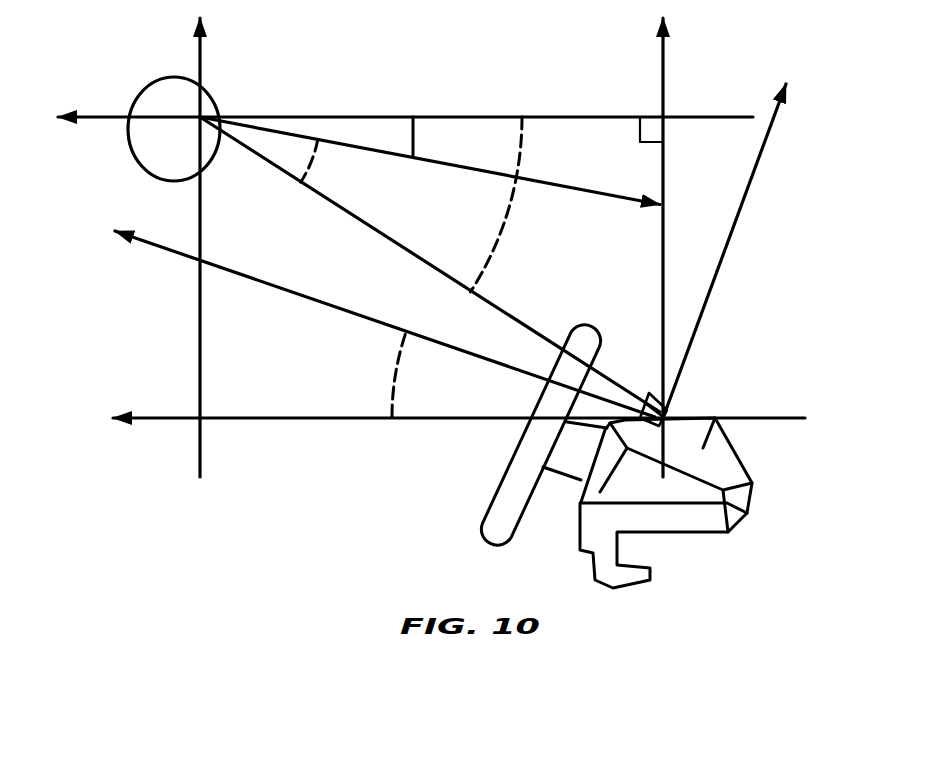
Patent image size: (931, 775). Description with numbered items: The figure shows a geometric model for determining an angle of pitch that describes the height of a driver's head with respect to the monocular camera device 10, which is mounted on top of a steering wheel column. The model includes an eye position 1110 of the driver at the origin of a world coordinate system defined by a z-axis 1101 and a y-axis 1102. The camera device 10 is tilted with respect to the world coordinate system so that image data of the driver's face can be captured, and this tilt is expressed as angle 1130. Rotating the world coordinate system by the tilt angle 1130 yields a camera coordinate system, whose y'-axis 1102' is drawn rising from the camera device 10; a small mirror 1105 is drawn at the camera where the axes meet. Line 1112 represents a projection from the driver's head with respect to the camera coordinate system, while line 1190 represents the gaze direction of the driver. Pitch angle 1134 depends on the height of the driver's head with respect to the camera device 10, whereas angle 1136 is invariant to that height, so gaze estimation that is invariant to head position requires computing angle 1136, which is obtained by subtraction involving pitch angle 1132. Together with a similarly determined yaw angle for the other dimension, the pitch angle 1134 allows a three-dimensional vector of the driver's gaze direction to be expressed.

The monocular camera device 10 is at (712, 437).
The z-axis 1101 is at (168, 250).
The y-axis 1102 is at (719, 247).
The y'-axis 1102' is at (760, 251).
The mirror 1105 is at (680, 405).
The eye position 1110 is at (208, 112).
The line 1112 is at (333, 205).
The angle 1130 is at (392, 373).
The pitch angle 1132 is at (505, 228).
The pitch angle 1134 is at (312, 168).
The angle 1136 is at (413, 143).
The line 1190 is at (553, 183).